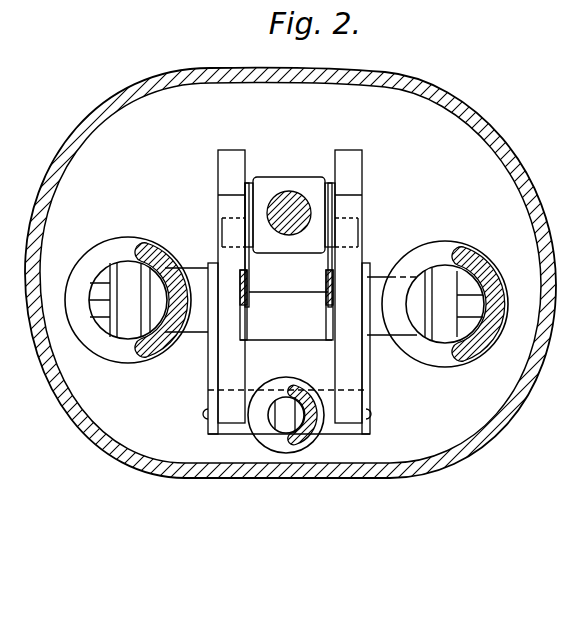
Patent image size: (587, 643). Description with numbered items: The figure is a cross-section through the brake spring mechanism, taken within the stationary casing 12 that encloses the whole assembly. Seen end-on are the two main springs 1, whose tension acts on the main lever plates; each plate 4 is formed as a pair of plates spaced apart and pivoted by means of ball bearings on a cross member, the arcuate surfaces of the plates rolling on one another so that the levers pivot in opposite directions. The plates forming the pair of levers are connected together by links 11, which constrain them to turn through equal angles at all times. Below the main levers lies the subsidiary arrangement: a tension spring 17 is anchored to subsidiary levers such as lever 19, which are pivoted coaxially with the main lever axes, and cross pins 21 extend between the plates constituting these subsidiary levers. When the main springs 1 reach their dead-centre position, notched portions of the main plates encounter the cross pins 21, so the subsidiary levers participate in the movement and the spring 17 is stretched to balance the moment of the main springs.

The main spring 1 is at (153, 243).
The plate 4 is at (221, 152).
The link 11 is at (327, 286).
The stationary casing 12 is at (100, 117).
The tension spring 17 is at (312, 441).
The lever 19 is at (214, 376).
The cross pin 21 is at (232, 434).